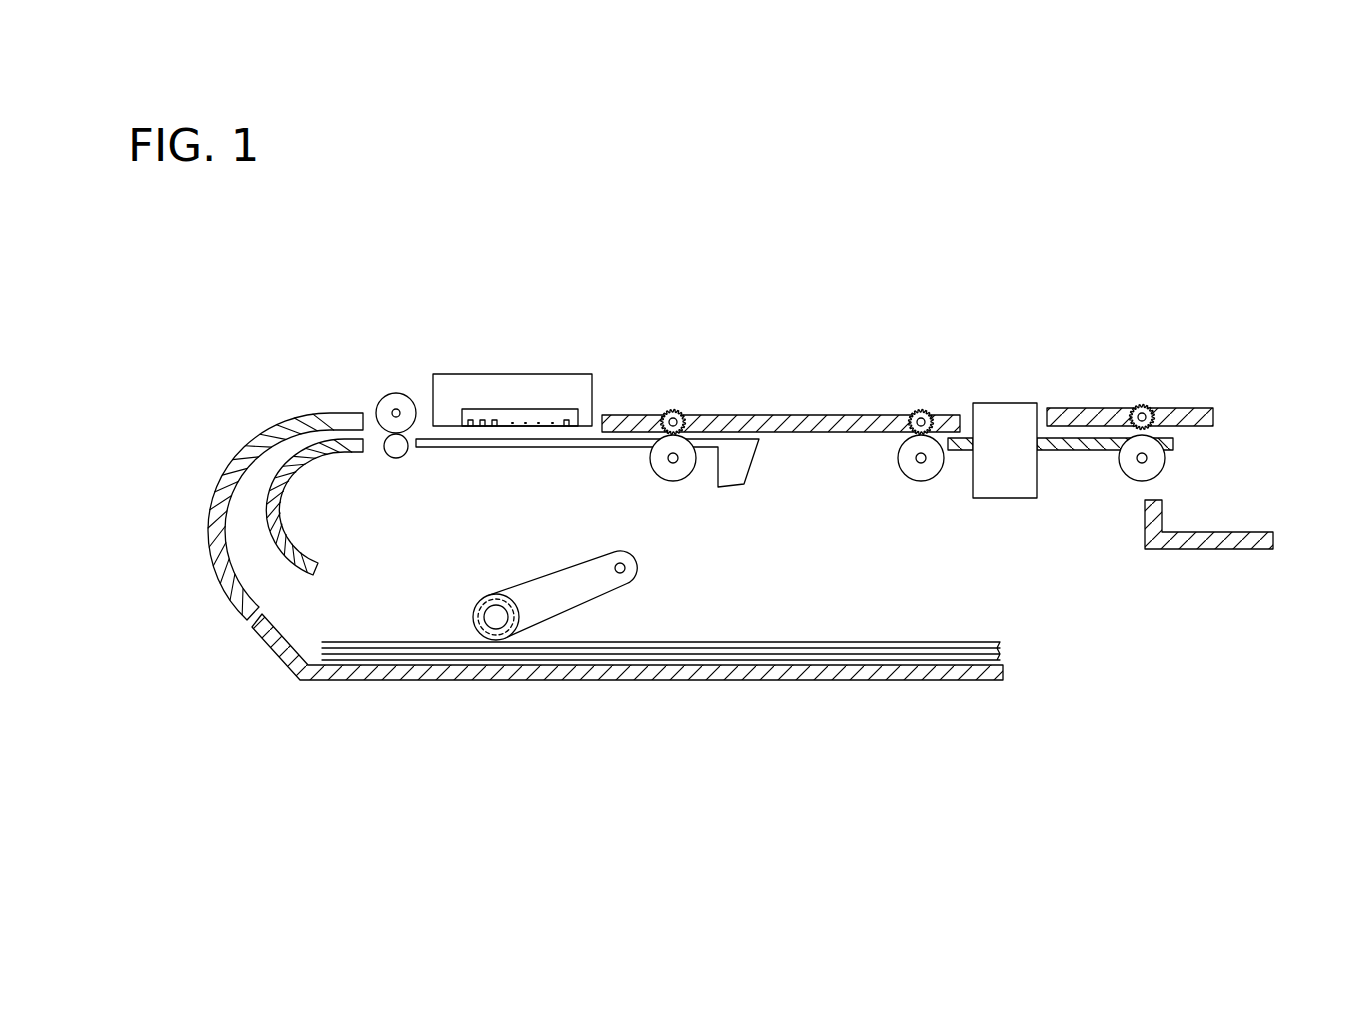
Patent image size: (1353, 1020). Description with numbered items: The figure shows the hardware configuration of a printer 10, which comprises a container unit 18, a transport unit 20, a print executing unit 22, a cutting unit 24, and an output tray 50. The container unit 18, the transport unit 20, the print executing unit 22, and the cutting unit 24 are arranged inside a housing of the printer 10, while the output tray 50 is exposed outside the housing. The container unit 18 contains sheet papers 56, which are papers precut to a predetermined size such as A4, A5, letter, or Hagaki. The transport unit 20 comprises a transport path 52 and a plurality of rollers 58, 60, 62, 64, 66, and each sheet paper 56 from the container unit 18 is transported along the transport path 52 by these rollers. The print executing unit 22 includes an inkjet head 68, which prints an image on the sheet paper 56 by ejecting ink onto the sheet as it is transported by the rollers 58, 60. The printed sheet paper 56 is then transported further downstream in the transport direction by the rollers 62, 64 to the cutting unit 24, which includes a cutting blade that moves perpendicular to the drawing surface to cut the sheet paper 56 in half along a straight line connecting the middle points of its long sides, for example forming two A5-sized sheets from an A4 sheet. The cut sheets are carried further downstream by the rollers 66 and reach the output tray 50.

The printer 10 is at (1142, 242).
The container unit 18 is at (647, 680).
The transport unit 20 is at (215, 445).
The print executing unit 22 is at (543, 362).
The cutting unit 24 is at (1010, 403).
The output tray 50 is at (1212, 549).
The transport path 52 is at (208, 527).
The sheet papers 56 is at (882, 642).
The roller 58 is at (467, 633).
The roller 60 is at (394, 392).
The roller 62 is at (673, 410).
The roller 64 is at (921, 410).
The roller 66 is at (1142, 405).
The inkjet head 68 is at (495, 409).